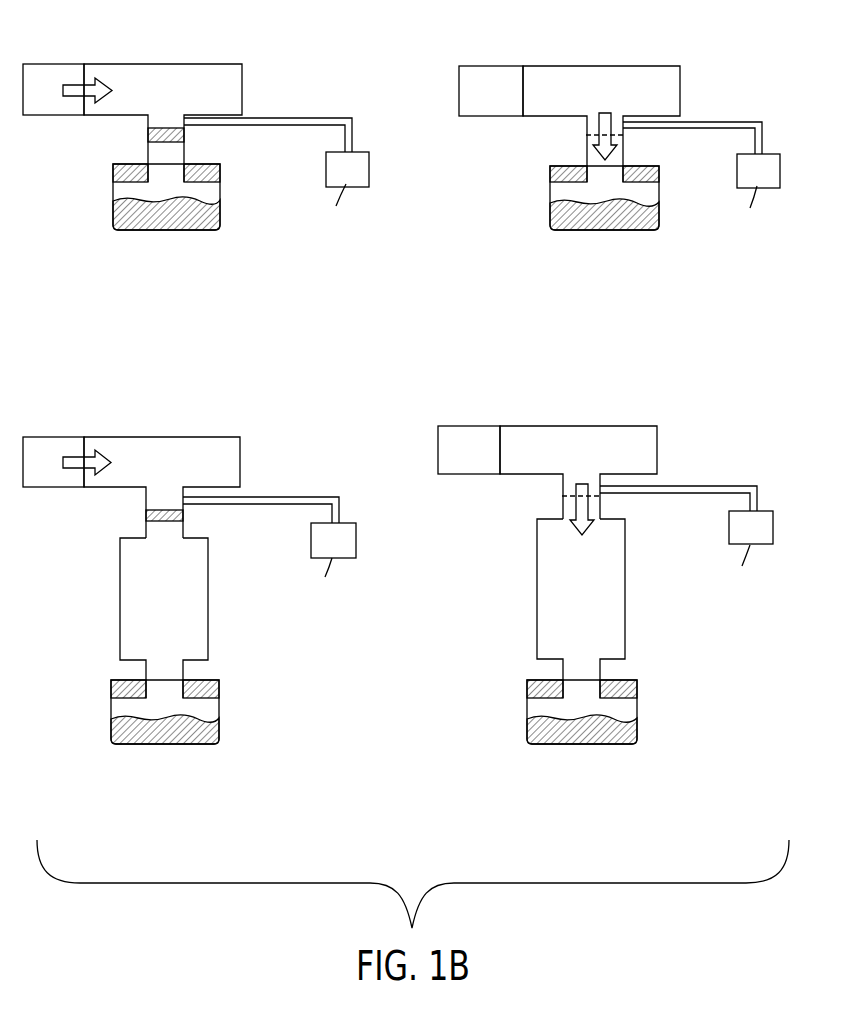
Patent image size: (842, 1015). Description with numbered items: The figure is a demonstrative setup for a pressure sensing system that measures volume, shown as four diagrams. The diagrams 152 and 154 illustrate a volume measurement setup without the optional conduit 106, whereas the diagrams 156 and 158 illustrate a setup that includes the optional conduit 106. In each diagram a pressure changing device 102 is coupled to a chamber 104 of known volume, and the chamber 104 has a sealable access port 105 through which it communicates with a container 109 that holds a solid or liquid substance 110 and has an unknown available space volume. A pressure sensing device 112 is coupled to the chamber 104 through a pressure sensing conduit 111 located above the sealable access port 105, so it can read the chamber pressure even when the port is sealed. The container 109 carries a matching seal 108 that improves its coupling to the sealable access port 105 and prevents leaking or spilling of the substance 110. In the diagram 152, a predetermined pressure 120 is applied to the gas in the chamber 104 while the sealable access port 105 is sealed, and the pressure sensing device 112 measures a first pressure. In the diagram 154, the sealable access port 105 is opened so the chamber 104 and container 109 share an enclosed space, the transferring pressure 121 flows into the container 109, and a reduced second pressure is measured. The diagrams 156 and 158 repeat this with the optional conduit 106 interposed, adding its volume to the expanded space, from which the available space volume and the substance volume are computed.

The pressure changing device 102 is at (273, 250).
The chamber 104 is at (382, 275).
The sealable access port 105 is at (411, 334).
The optional conduit 106 is at (401, 608).
The matching seal 108 is at (409, 439).
The container 109 is at (379, 472).
The solid or liquid substance 110 is at (409, 479).
The pressure sensing conduit 111 is at (472, 295).
The pressure sensing device 112 is at (558, 353).
The predetermined pressure 120 is at (84, 299).
The transferring pressure 121 is at (567, 324).
The diagram 152 is at (204, 276).
The diagram 154 is at (657, 275).
The diagram 156 is at (201, 793).
The diagram 158 is at (619, 793).